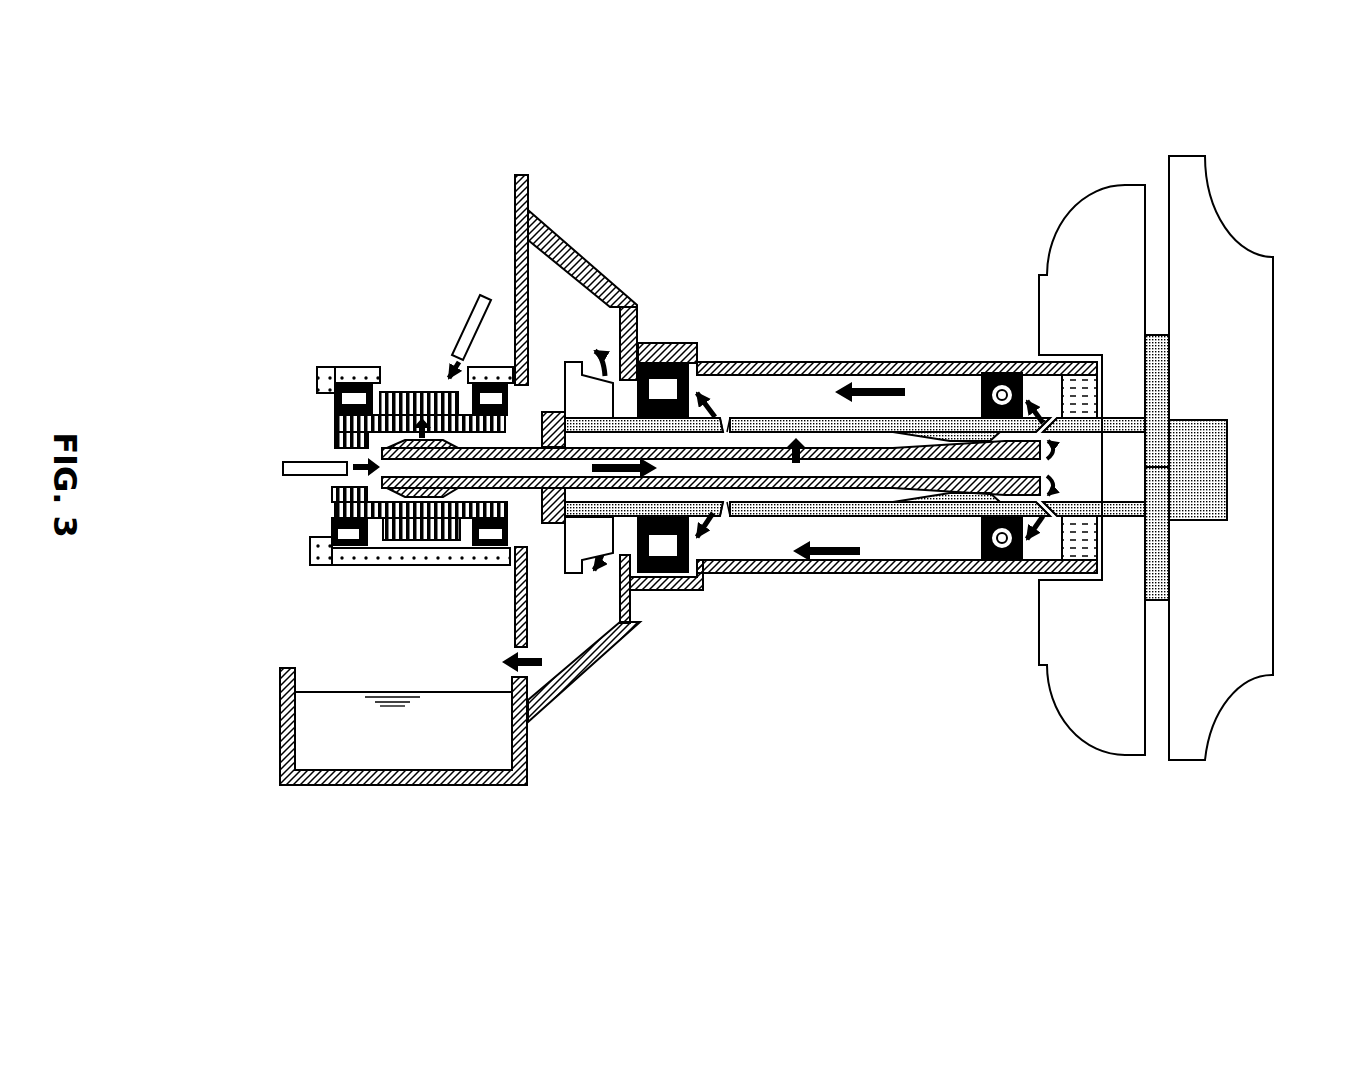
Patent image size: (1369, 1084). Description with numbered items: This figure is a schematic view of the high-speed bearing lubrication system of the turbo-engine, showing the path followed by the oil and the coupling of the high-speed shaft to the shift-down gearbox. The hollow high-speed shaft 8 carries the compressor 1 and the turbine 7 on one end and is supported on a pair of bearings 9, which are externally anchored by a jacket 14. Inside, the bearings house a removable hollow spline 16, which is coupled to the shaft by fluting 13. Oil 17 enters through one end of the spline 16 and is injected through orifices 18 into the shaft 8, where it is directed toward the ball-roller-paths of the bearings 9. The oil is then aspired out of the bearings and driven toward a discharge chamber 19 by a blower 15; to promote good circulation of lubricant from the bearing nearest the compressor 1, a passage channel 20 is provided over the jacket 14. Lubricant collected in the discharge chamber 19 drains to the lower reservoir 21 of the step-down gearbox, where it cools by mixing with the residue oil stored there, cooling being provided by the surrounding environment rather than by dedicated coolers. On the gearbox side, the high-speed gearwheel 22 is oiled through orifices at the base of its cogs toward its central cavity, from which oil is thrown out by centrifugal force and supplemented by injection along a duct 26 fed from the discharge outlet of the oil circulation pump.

The compressor 1 is at (1098, 650).
The turbine 7 is at (1227, 275).
The high-speed shaft 8 is at (1095, 427).
The bearings 9 is at (658, 388).
The fluting 13 is at (958, 502).
The jacket 14 is at (870, 565).
The blower 15 is at (585, 403).
The removable hollow spline 16 is at (513, 448).
The oil duct 17 is at (310, 467).
The orifices 18 is at (717, 513).
The discharge chamber 19 is at (563, 622).
The passage channel 20 is at (677, 578).
The lower reservoir 21 is at (335, 705).
The high-speed gearwheel 22 is at (413, 390).
The duct 26 is at (472, 316).